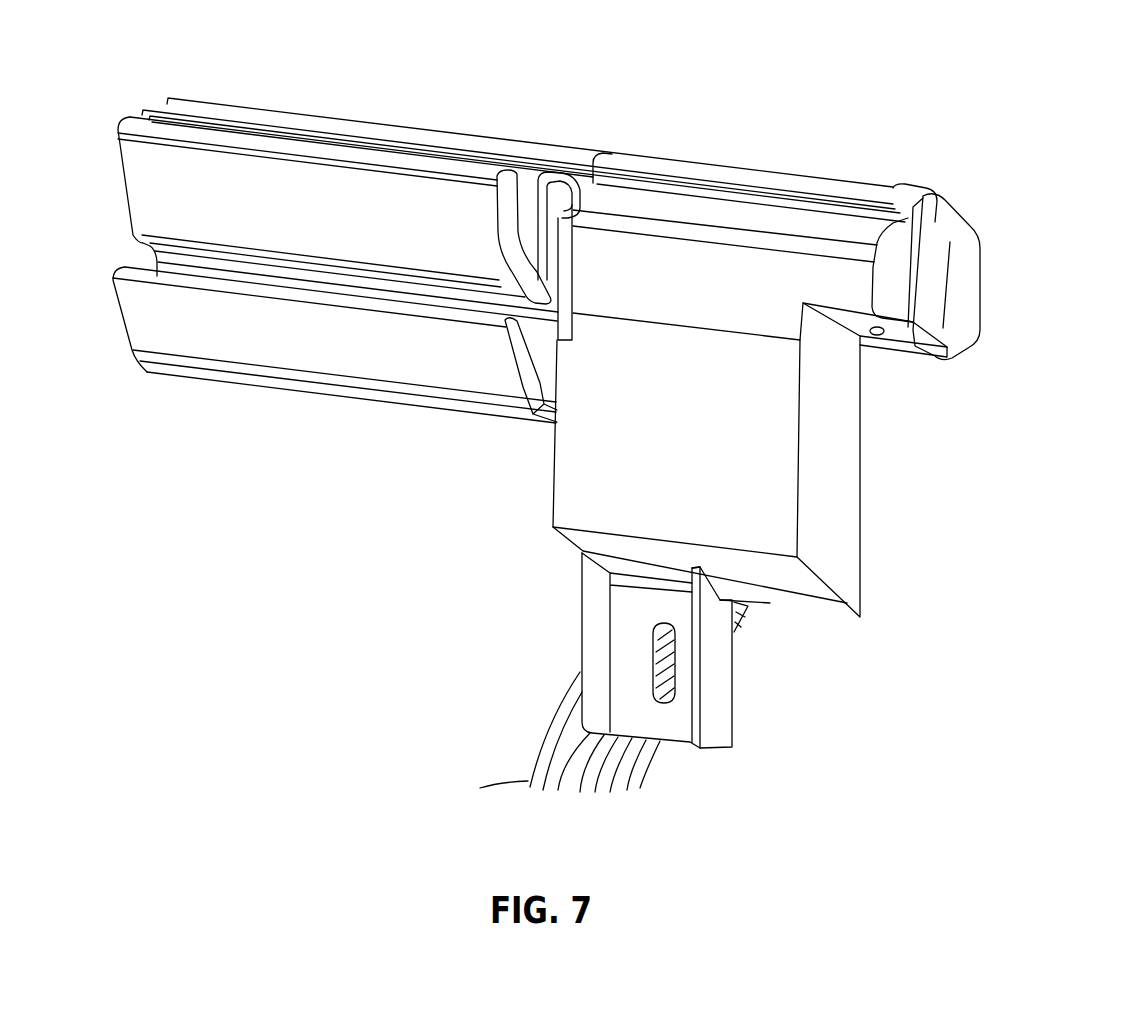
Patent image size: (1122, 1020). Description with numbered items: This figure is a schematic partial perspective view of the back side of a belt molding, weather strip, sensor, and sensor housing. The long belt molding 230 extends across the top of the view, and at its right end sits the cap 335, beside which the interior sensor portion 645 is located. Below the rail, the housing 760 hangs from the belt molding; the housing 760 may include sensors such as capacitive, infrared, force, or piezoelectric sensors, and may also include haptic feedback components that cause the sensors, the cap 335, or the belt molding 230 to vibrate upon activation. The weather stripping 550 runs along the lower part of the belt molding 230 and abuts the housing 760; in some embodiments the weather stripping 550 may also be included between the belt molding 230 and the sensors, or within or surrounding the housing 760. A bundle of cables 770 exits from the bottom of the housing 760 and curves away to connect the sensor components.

The belt molding 230 is at (532, 147).
The cap 335 is at (798, 190).
The weather stripping 550 is at (478, 378).
The interior sensor portion 645 is at (958, 305).
The housing 760 is at (762, 487).
The cables 770 is at (543, 740).